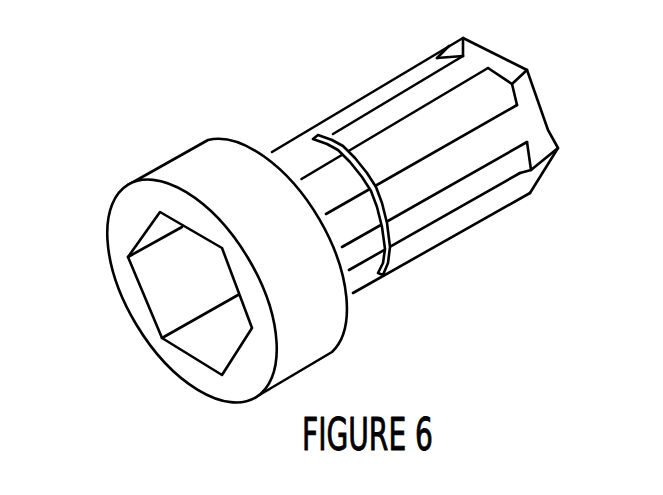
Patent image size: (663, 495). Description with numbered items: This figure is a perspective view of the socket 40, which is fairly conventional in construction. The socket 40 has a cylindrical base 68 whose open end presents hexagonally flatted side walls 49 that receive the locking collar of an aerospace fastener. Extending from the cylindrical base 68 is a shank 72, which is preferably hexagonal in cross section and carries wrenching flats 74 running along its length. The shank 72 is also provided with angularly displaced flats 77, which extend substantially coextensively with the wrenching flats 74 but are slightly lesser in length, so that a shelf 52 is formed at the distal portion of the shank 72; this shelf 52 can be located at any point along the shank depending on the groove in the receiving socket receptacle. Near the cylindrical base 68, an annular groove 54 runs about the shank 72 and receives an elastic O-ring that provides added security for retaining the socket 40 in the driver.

The socket 40 is at (436, 181).
The hexagonally flatted side walls 49 is at (205, 347).
The shelf 52 is at (458, 43).
The annular groove 54 is at (308, 137).
The cylindrical base 68 is at (222, 200).
The shank 72 is at (375, 94).
The wrenching flats 74 is at (487, 143).
The angularly displaced flats 77 is at (488, 93).